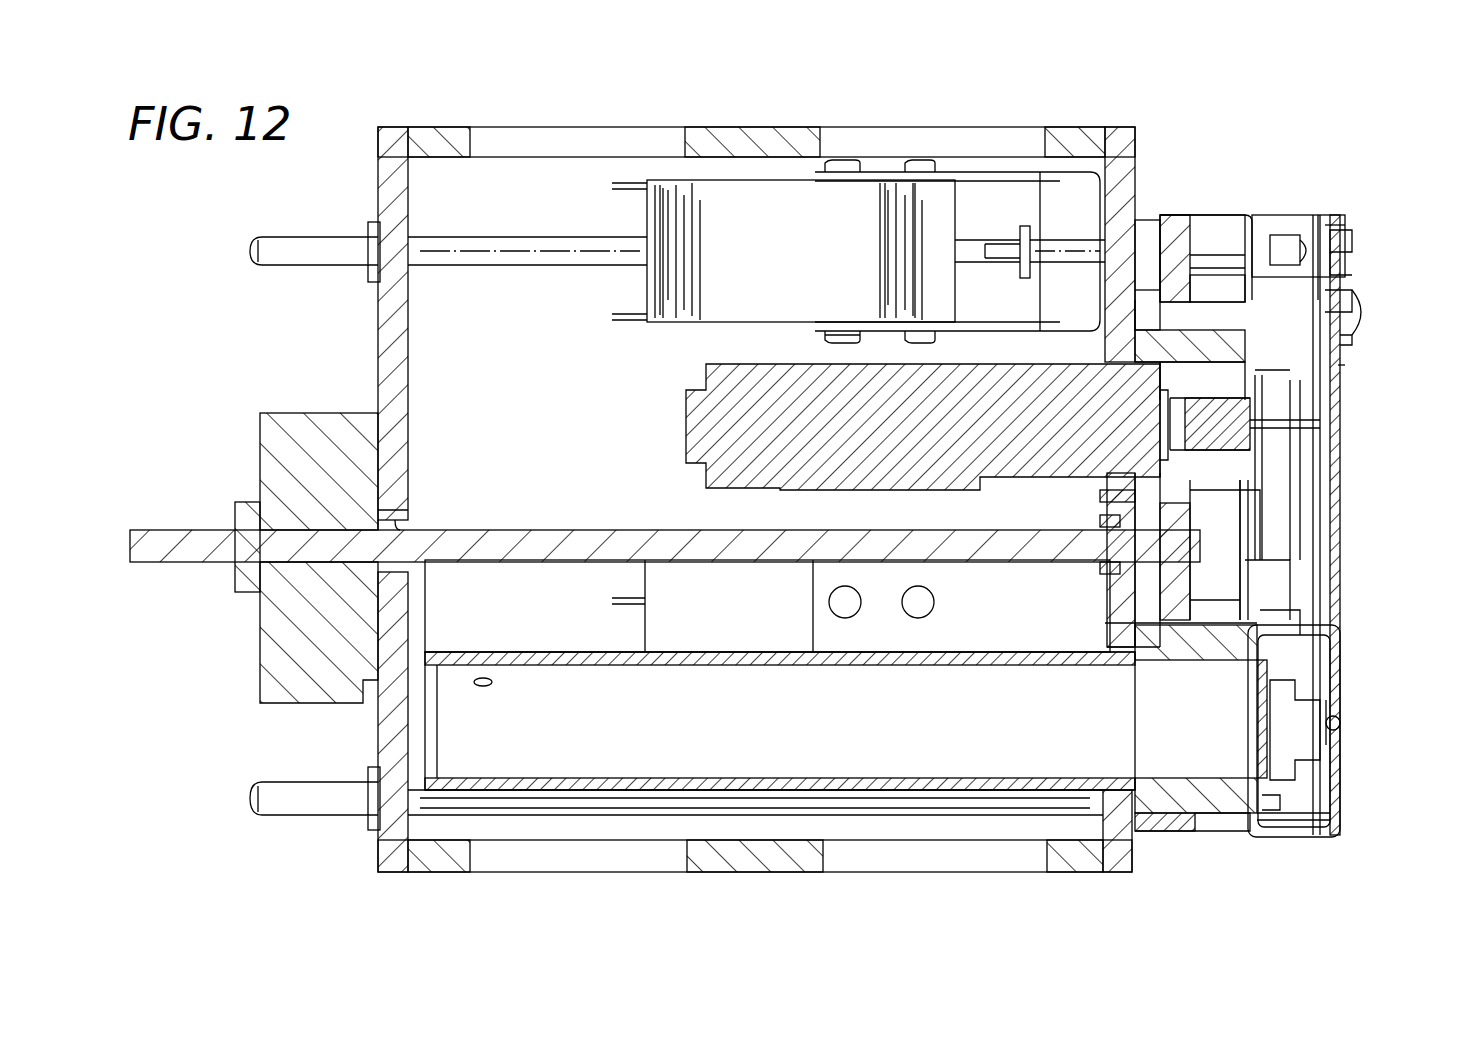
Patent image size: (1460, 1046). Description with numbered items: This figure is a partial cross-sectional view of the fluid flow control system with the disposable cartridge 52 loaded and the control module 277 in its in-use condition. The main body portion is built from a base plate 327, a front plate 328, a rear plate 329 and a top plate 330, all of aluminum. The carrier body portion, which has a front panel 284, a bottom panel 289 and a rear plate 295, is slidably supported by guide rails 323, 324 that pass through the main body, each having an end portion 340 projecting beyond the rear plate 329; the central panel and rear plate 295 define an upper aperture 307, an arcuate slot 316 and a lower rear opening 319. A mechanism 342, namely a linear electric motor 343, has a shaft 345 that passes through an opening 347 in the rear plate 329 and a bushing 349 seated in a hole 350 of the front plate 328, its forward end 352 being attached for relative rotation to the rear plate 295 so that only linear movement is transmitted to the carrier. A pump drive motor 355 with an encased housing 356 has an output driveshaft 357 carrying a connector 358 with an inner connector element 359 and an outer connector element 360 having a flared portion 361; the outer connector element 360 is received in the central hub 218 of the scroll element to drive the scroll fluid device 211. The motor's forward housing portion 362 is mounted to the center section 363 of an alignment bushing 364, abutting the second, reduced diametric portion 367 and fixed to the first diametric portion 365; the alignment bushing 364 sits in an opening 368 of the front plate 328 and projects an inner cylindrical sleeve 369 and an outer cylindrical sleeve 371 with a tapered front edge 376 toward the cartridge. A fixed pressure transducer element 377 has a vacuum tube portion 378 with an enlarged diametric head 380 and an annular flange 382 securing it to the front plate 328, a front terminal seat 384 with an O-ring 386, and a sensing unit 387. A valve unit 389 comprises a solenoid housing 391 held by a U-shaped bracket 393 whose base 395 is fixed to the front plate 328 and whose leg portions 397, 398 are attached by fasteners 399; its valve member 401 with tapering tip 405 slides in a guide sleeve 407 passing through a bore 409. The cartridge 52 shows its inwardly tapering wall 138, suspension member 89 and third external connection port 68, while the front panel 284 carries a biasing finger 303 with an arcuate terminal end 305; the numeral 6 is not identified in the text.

The control module 277 is at (1297, 451).
The valve unit 389 is at (675, 170).
The top plate 330 is at (780, 130).
The U-shaped bracket 393 is at (990, 170).
The front plate 328 is at (1130, 158).
The bore 409 is at (1145, 225).
The guide sleeve 407 is at (1175, 215).
The rear plate 295 is at (1190, 235).
The valve member 401 is at (1265, 235).
The upper aperture 307 is at (1325, 230).
The tapering tip 405 is at (1345, 222).
The disposable cartridge 52 is at (1360, 240).
The third external connection port 68 is at (1365, 262).
The alignment bushing 364 is at (1340, 295).
The tapered front edge 376 is at (1355, 325).
The suspension member 89 is at (1350, 345).
The central hub 218 is at (1300, 375).
The outer connector element 360 is at (1275, 410).
The housing 6 is at (1350, 368).
The scroll fluid device 211 is at (1300, 425).
The flared portion 361 is at (1305, 470).
The arcuate slot 316 is at (1322, 515).
The front panel 284 is at (1342, 560).
The connector 358 is at (1215, 470).
The forward end 352 is at (1250, 540).
The lower rear opening 319 is at (1262, 620).
The arcuate terminal end 305 is at (1335, 700).
The biasing finger 303 is at (1345, 733).
The bottom panel 289 is at (1300, 835).
The fixed pressure transducer element 377 is at (1205, 825).
The O-ring 386 is at (1250, 800).
The front terminal seat 384 is at (1262, 800).
The sensing unit 387 is at (1265, 700).
The enlarged diametric head 380 is at (1195, 660).
The annular flange 382 is at (1095, 650).
The vacuum tube portion 378 is at (700, 778).
The base plate 327 is at (765, 855).
The guide rail 324 is at (470, 820).
The end portion 340 is at (290, 250).
The rear plate 329 is at (385, 360).
The mechanism 342 is at (268, 522).
The linear electric motor 343 is at (265, 468).
The opening 347 is at (420, 520).
The shaft 345 is at (510, 530).
The guide rail 323 is at (475, 250).
The pump drive motor 355 is at (849, 419).
The encased housing 356 is at (740, 405).
The solenoid housing 391 is at (783, 251).
The leg portion 397 is at (960, 205).
The leg portion 398 is at (960, 310).
The fasteners 399 is at (840, 335).
The base 395 is at (1085, 195).
The inwardly tapering wall 138 is at (1030, 252).
The opening 368 is at (1130, 350).
The inner connector element 359 is at (1150, 335).
The second, reduced diametric portion 367 is at (1130, 470).
The output driveshaft 357 is at (1165, 440).
The inner cylindrical sleeve 369 is at (1175, 355).
The outer cylindrical sleeve 371 is at (1215, 300).
The forward housing portion 362 is at (1105, 495).
The first diametric portion 365 is at (1110, 522).
The center section 363 is at (1110, 568).
The bushing 349 is at (1120, 562).
The hole 350 is at (1100, 612).